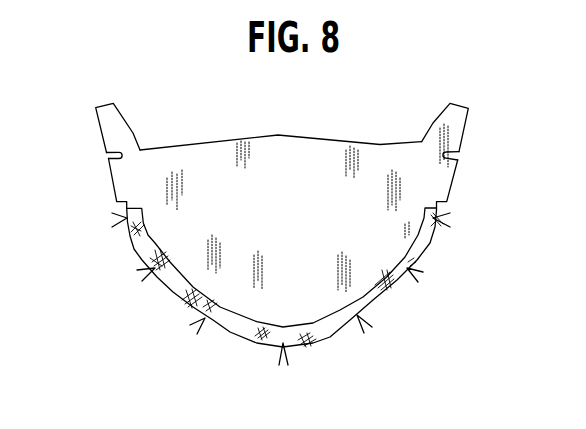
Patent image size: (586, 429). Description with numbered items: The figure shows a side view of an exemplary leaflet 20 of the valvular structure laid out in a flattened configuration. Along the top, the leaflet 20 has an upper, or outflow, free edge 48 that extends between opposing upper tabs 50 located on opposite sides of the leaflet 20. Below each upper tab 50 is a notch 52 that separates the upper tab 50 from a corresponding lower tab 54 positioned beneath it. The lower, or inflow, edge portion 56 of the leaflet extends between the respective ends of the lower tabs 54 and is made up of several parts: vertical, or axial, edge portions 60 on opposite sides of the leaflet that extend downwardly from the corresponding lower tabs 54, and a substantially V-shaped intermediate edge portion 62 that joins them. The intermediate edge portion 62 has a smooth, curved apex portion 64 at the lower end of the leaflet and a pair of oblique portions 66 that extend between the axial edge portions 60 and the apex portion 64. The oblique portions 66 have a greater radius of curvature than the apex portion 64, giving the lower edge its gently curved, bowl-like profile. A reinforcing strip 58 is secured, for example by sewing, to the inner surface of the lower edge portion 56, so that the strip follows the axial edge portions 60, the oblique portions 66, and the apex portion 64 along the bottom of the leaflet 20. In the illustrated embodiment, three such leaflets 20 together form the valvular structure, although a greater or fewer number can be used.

The leaflet 20 is at (123, 117).
The upper free edge 48 is at (317, 138).
The upper tab 50 is at (100, 131).
The notch 52 is at (110, 157).
The lower tab 54 is at (112, 183).
The lower edge portion 56 is at (388, 295).
The reinforcing strip 58 is at (158, 243).
The axial edge portion 60 is at (127, 230).
The intermediate edge portion 62 is at (157, 287).
The apex portion 64 is at (293, 350).
The oblique portion 66 is at (202, 337).